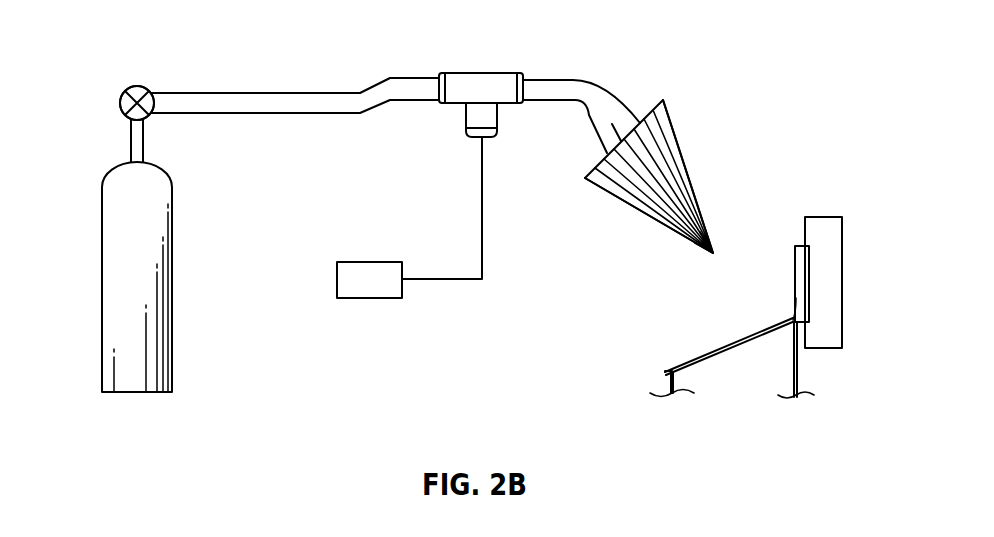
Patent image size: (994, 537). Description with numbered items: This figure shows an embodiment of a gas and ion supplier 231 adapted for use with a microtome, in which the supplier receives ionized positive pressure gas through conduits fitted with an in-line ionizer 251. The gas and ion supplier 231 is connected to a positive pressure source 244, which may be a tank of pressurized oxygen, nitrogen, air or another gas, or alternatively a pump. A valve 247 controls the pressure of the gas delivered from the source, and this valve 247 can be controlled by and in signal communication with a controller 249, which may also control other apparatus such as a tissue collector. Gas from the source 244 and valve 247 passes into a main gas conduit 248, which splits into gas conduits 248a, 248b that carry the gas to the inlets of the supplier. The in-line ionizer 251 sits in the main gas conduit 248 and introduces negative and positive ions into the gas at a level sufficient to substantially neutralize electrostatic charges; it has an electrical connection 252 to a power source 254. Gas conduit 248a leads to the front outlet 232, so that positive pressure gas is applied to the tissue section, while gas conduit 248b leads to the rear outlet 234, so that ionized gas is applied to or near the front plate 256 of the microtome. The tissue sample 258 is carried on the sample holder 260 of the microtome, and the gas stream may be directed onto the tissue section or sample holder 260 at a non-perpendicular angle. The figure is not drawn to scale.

The gas and ion supplier 231 is at (673, 140).
The front outlet 232 is at (703, 213).
The rear outlet 234 is at (714, 257).
The positive pressure source 244 is at (113, 285).
The valve 247 is at (121, 103).
The main gas conduit 248 is at (242, 93).
The gas conduit 248a is at (590, 79).
The gas conduit 248b is at (588, 136).
The controller 249 is at (136, 88).
The in-line ionizer 251 is at (465, 73).
The electrical connection 252 is at (428, 281).
The power source 254 is at (395, 293).
The front plate 256 is at (678, 366).
The tissue sample 258 is at (799, 246).
The sample holder 260 is at (835, 288).